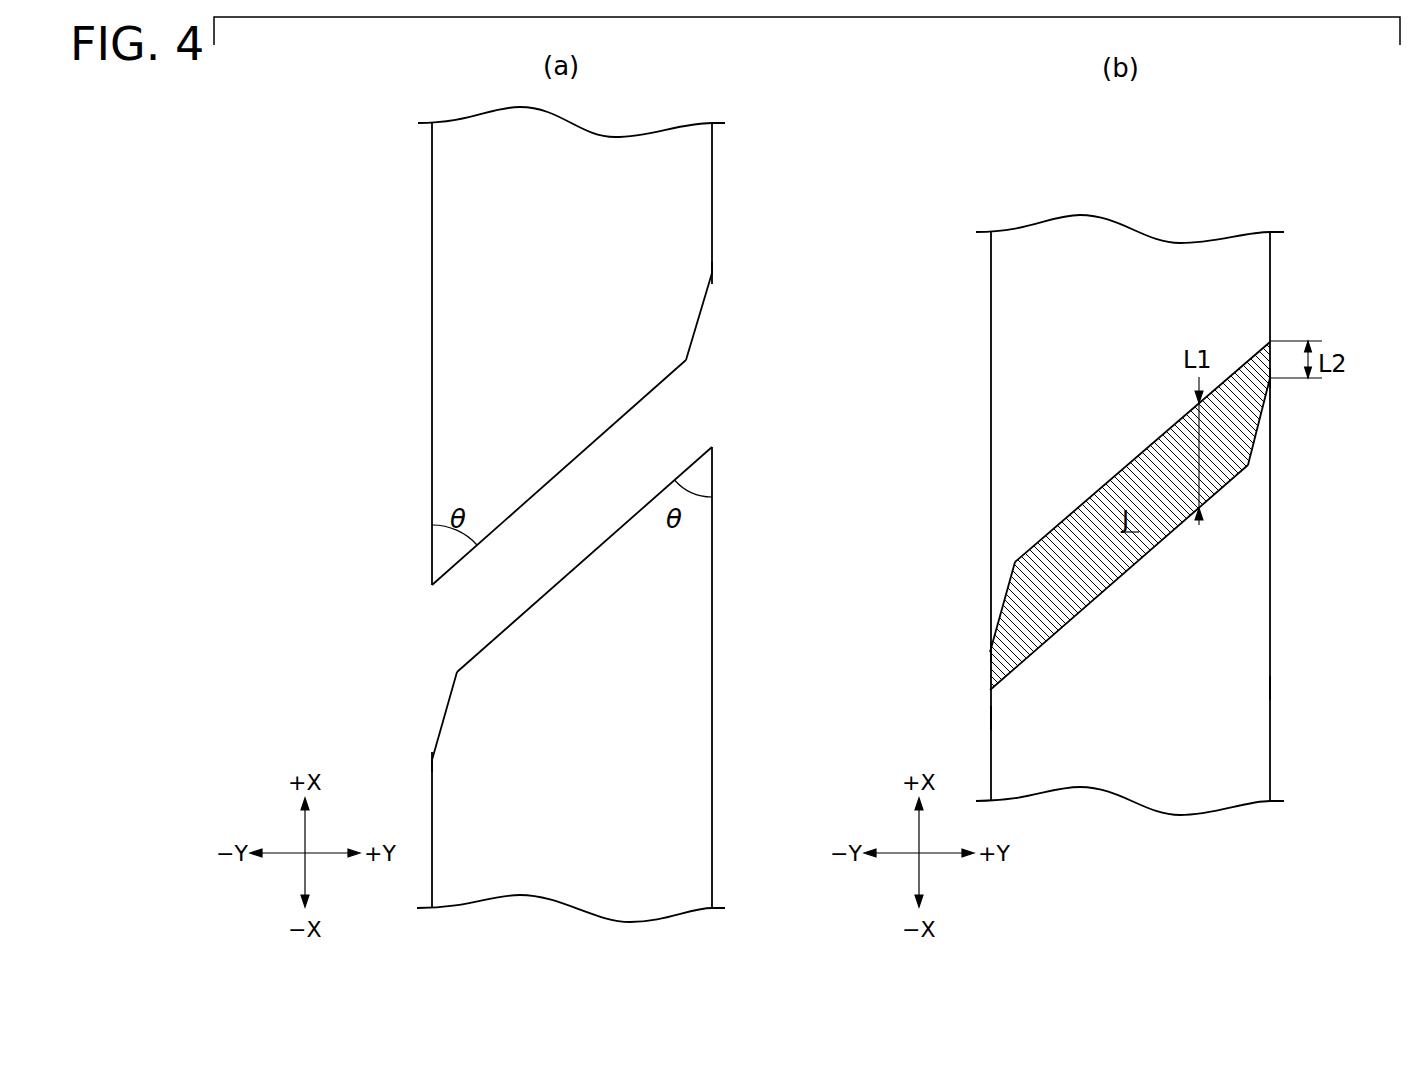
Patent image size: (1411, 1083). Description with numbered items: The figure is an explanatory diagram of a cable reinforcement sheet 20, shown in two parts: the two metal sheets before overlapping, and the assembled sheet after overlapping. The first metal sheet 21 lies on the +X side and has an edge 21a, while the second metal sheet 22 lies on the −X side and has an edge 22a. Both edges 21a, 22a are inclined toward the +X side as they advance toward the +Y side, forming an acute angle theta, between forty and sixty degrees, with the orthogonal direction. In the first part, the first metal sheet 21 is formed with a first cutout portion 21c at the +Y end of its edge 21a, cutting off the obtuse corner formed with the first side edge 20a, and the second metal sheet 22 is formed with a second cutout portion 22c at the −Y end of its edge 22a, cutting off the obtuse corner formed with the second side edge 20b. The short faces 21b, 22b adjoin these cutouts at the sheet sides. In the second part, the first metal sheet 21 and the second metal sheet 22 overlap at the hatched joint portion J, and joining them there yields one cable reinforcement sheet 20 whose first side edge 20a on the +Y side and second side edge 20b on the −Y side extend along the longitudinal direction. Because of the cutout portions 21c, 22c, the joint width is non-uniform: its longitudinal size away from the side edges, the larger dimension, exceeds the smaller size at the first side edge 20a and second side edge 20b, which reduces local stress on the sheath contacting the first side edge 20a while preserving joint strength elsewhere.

The cable reinforcement sheet 20 is at (1398, 266).
The first side edge 20a is at (1272, 688).
The second side edge 20b is at (990, 718).
The first metal sheet 21 is at (724, 178).
The edge 21a is at (572, 462).
The side surface of first member 21b is at (712, 273).
The first cutout portion 21c is at (700, 318).
The second metal sheet 22 is at (724, 694).
The edge 22a is at (570, 571).
The side surface of second member 22b is at (432, 760).
The second cutout portion 22c is at (445, 712).